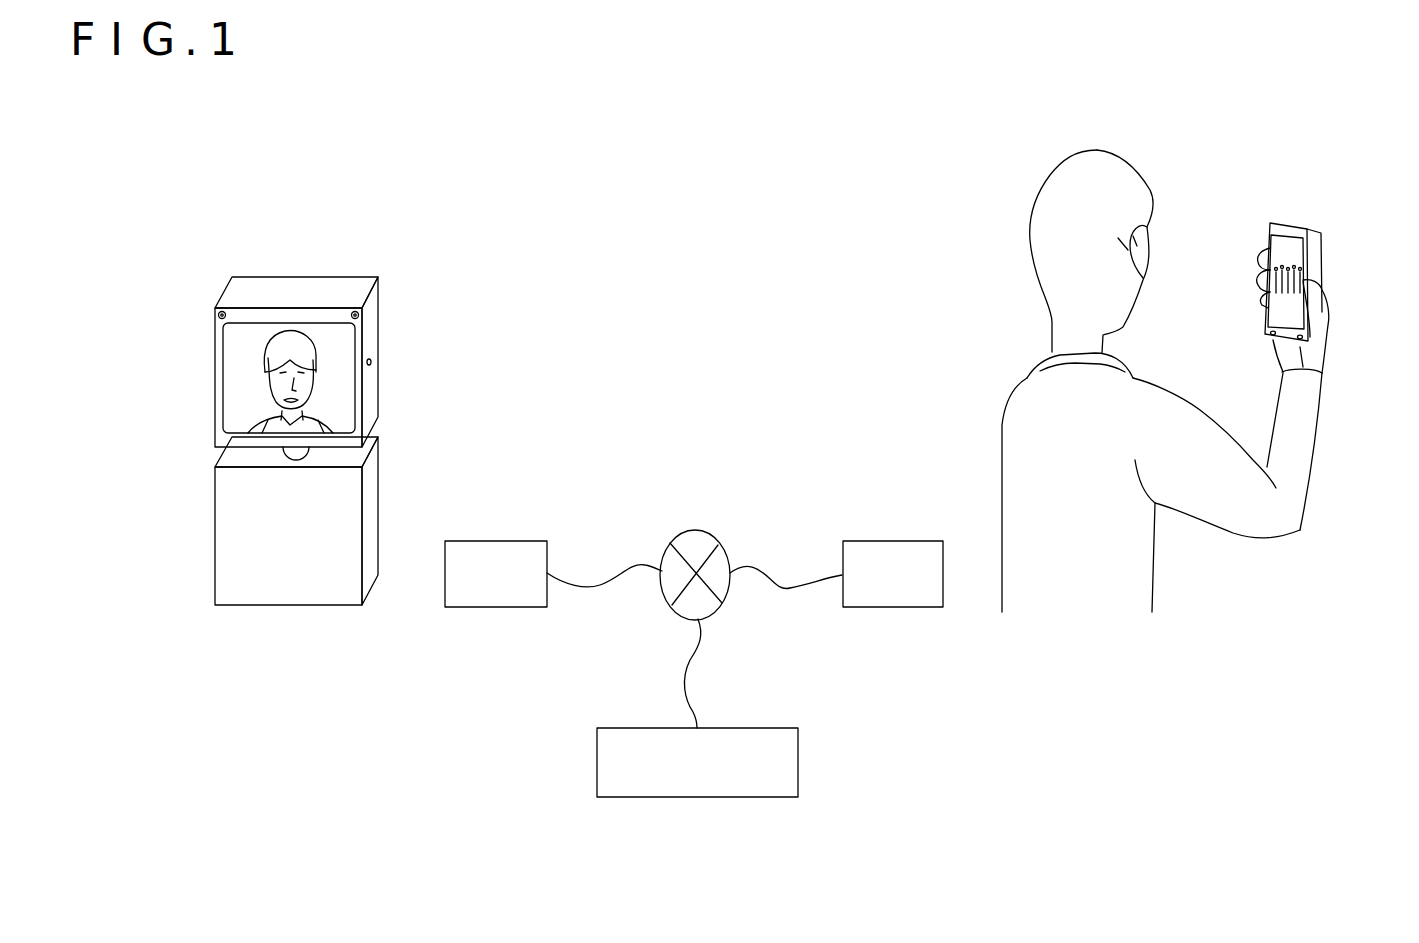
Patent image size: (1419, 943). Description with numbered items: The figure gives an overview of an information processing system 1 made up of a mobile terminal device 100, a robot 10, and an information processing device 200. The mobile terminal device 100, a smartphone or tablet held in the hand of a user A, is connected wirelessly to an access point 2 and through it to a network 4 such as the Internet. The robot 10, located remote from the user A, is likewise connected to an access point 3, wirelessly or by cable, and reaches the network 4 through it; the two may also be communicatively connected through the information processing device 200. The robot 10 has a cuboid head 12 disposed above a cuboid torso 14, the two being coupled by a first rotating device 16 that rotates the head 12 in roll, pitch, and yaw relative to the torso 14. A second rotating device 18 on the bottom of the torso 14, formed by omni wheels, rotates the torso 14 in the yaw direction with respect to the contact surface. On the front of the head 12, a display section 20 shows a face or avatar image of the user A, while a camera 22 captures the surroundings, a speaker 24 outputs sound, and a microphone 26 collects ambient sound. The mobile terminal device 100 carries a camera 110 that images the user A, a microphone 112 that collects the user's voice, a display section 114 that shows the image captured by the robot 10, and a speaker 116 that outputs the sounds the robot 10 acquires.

The information processing system 1 is at (760, 925).
The robot 10 is at (172, 336).
The head 12 is at (372, 318).
The torso 14 is at (367, 522).
The first rotating device 16 is at (268, 453).
The second rotating device 18 is at (234, 574).
The display section 20 is at (250, 343).
The camera 22 is at (228, 304).
The speaker 24 is at (343, 300).
The microphone 26 is at (377, 363).
The access point 2 is at (910, 541).
The access point 3 is at (514, 541).
The network 4 is at (707, 532).
The information processing device 200 is at (767, 728).
The user A is at (1130, 548).
The mobile terminal device 100 is at (1288, 198).
The camera 110 is at (1311, 224).
The microphone 112 is at (1290, 347).
The display section 114 is at (1281, 241).
The speaker 116 is at (1273, 341).